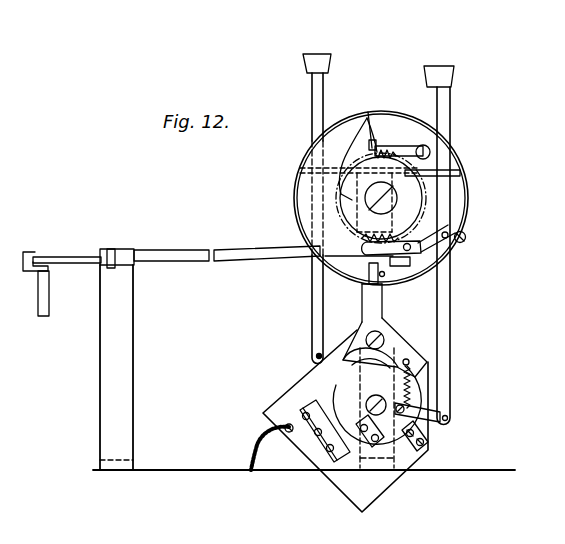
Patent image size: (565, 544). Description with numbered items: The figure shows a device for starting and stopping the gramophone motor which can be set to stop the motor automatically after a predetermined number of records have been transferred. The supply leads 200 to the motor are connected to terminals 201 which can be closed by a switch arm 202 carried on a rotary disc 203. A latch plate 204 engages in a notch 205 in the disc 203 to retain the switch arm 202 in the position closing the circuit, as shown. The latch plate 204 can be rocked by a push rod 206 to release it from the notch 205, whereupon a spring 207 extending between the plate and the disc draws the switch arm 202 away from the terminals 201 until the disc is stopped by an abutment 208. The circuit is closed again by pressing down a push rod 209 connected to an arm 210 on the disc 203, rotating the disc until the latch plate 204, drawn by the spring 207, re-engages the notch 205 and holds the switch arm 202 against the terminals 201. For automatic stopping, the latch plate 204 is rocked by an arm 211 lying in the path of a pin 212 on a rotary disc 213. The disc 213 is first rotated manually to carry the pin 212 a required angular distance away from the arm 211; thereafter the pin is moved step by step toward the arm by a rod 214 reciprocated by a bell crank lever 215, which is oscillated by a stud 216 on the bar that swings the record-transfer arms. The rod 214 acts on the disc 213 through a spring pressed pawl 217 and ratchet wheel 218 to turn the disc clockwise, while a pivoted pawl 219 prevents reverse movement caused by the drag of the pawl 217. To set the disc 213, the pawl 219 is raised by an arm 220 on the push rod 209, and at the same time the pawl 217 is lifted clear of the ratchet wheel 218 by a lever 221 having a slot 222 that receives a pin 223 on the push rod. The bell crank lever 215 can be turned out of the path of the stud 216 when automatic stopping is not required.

The supply leads 200 is at (257, 428).
The terminals 201 is at (334, 452).
The switch arm 202 is at (364, 463).
The rotary disc 203 is at (350, 383).
The latch plate 204 is at (357, 362).
The notch 205 is at (345, 345).
The push rod 206 is at (313, 284).
The spring 207 is at (412, 383).
The abutment 208 is at (424, 437).
The push rod 209 is at (441, 93).
The arm 210 is at (422, 415).
The arm 211 is at (372, 303).
The pin 212 is at (396, 267).
The rotary disc 213 is at (467, 200).
The rod 214 is at (155, 214).
The bell crank lever 215 is at (77, 258).
The stud 216 is at (27, 254).
The spring pressed pawl 217 is at (362, 240).
The ratchet wheel 218 is at (345, 195).
The pivoted pawl 219 is at (395, 147).
The arm 220 is at (368, 112).
The lever 221 is at (466, 236).
The slot 222 is at (442, 236).
The pin 223 is at (440, 230).